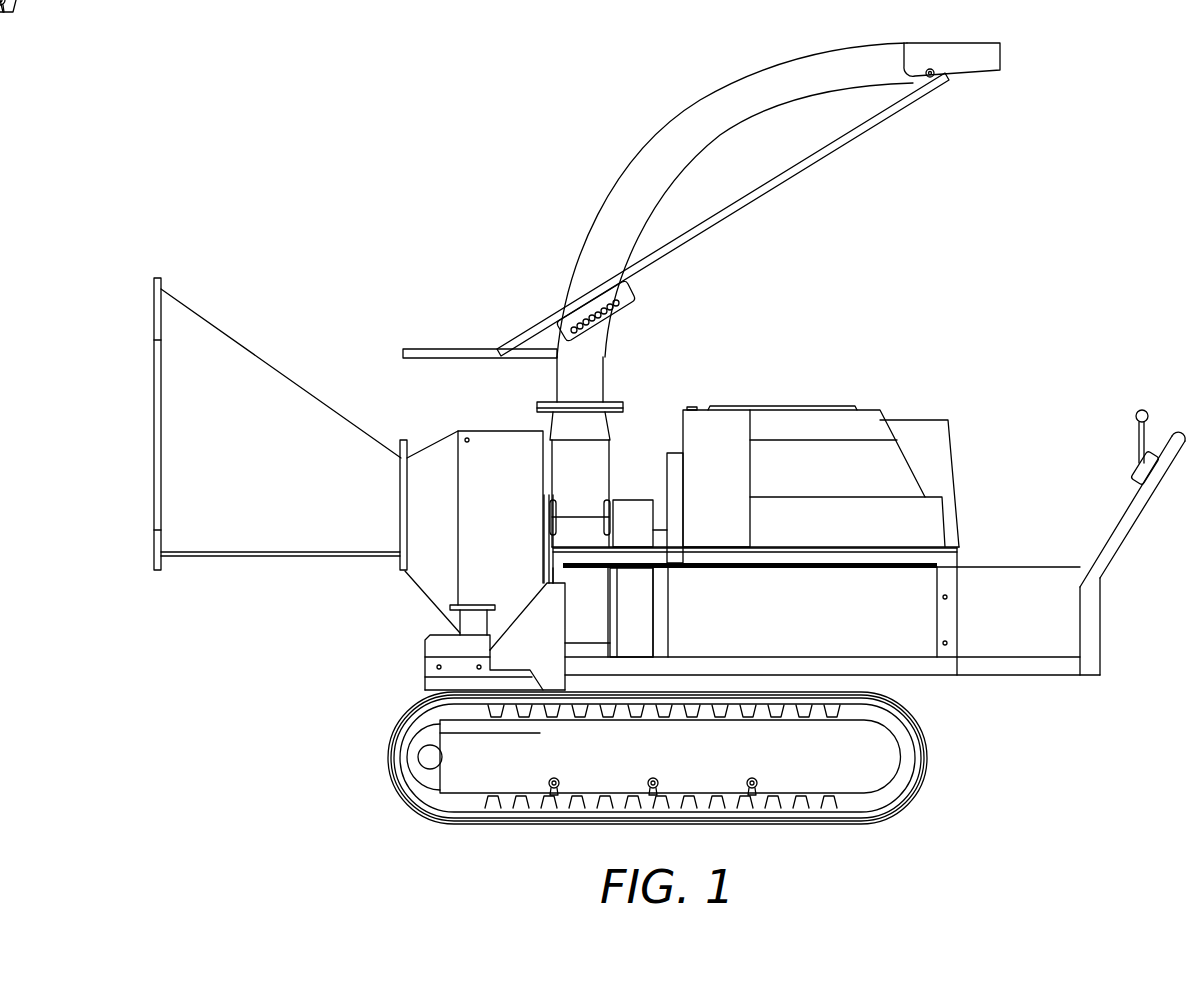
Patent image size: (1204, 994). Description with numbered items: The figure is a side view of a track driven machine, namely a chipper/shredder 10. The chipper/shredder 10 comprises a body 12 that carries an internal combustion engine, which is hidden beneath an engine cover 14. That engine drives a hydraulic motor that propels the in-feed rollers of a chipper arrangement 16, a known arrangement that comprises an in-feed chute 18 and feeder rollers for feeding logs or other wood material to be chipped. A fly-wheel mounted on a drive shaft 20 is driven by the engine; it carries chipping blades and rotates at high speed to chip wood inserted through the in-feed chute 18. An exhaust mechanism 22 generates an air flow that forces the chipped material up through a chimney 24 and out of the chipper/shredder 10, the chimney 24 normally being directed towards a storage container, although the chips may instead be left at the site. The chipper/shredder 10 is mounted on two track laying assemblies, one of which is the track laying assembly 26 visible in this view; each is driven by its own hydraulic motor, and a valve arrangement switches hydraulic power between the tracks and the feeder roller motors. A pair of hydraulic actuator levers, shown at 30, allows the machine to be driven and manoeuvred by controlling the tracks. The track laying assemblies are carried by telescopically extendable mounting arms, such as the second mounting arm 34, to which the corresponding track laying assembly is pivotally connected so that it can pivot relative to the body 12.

The chipper/shredder 10 is at (1079, 209).
The body 12 is at (947, 586).
The engine cover 14 is at (872, 420).
The chipper arrangement 16 is at (424, 421).
The in-feed chute 18 is at (228, 333).
The drive shaft 20 is at (560, 555).
The exhaust mechanism 22 is at (652, 386).
The chimney 24 is at (662, 123).
The track laying assembly 26 is at (927, 747).
The hydraulic levers 30 is at (1142, 410).
The second mounting arm 34 is at (638, 608).